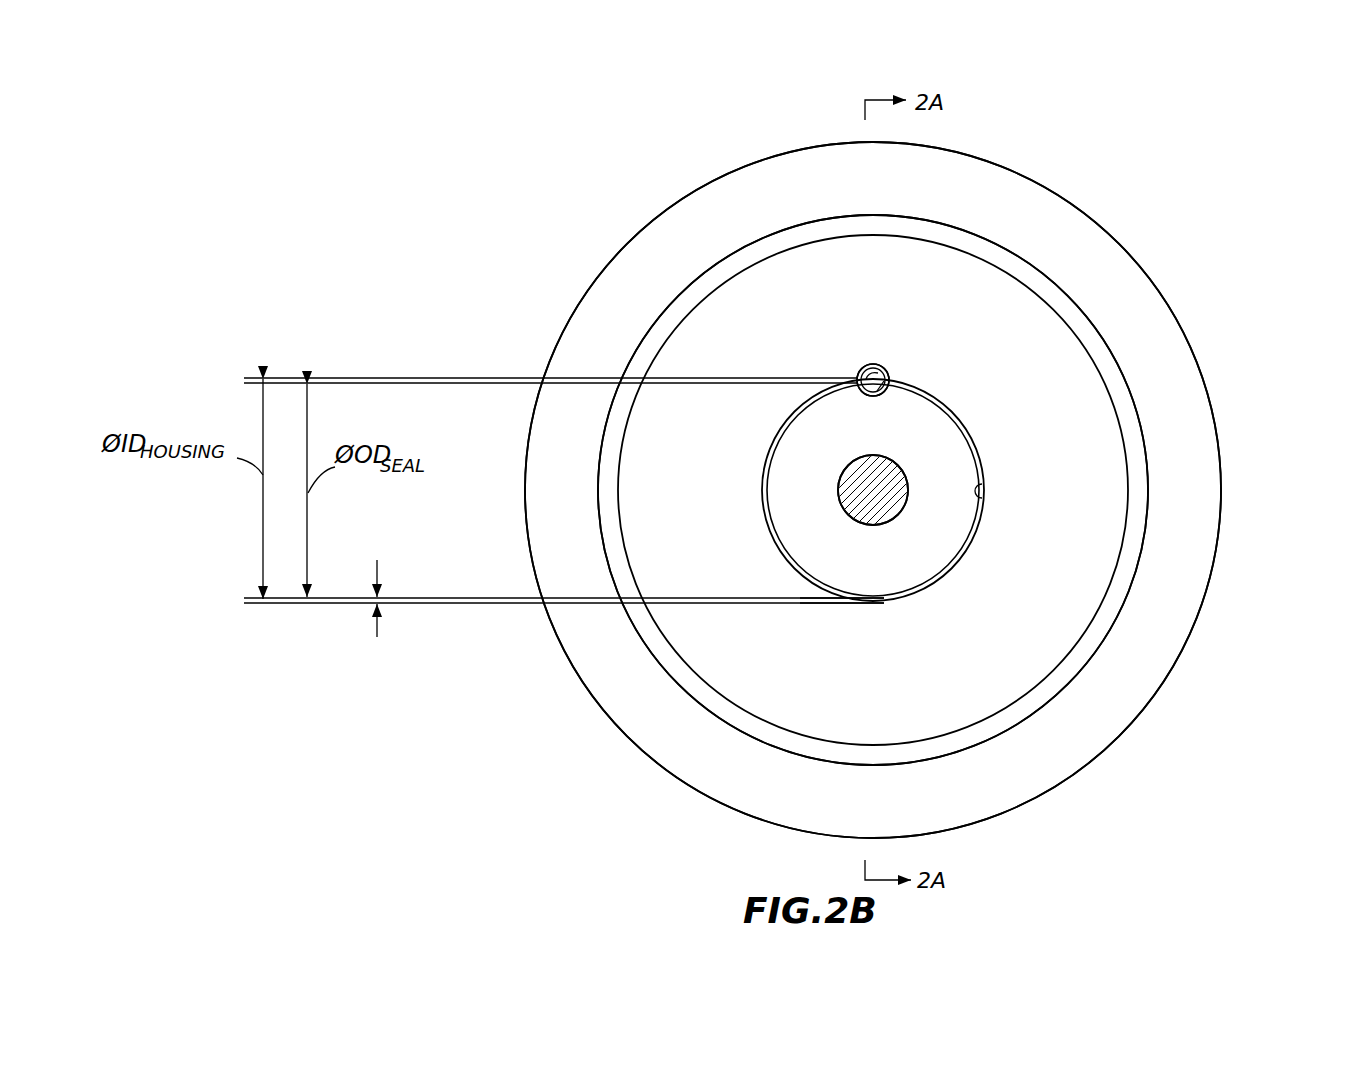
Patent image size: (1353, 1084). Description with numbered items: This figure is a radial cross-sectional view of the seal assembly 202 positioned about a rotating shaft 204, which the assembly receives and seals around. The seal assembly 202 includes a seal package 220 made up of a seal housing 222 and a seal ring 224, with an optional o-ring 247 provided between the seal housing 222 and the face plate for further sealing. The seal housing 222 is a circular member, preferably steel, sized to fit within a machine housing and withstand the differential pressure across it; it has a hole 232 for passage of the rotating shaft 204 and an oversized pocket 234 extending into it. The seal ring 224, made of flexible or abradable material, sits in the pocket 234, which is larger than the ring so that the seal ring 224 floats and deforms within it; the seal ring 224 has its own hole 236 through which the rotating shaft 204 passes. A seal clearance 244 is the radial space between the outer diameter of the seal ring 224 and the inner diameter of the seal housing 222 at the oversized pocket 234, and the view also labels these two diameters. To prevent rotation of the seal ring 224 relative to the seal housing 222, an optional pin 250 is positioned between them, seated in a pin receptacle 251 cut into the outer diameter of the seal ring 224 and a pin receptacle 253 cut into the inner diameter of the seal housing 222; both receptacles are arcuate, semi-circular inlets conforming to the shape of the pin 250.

The seal assembly 202 is at (1203, 362).
The seal package 220 is at (968, 152).
The seal housing 222 is at (755, 197).
The o-ring 247 is at (1085, 337).
The seal ring 224 is at (775, 458).
The hole 232 is at (893, 602).
The pocket 234 is at (985, 505).
The rotating shaft 204 is at (890, 503).
The hole 236 is at (892, 523).
The pin 250 is at (888, 372).
The pin receptacle 251 is at (892, 378).
The pin receptacle 253 is at (858, 372).
The seal clearance 244 is at (377, 630).